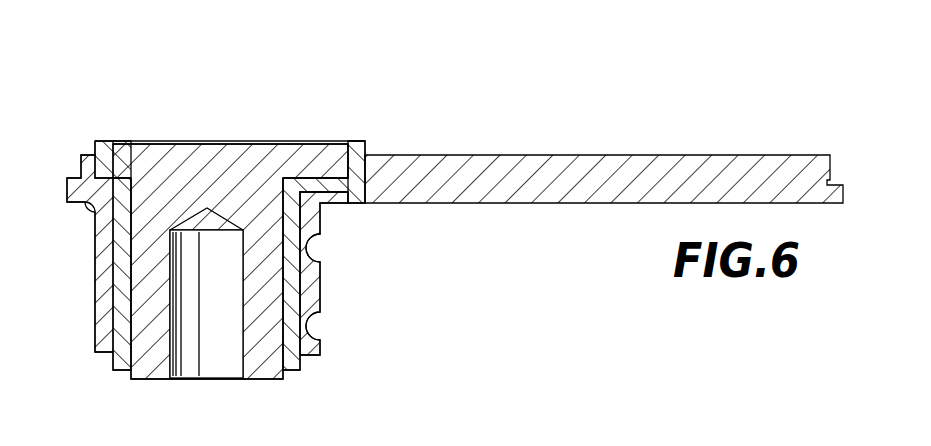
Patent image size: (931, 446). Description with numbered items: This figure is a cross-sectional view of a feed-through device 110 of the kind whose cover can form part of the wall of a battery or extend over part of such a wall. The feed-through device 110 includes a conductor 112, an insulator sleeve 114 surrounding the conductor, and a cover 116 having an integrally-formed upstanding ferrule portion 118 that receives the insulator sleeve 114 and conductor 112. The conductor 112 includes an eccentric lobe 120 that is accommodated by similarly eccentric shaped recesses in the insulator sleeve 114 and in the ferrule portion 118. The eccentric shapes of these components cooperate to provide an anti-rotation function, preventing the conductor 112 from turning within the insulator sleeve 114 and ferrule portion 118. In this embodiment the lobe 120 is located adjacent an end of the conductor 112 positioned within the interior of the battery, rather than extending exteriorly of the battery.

The feed-through device 110 is at (449, 264).
The conductor 112 is at (246, 152).
The insulator sleeve 114 is at (121, 155).
The cover 116 is at (518, 203).
The ferrule portion 118 is at (322, 287).
The eccentric lobe 120 is at (312, 155).